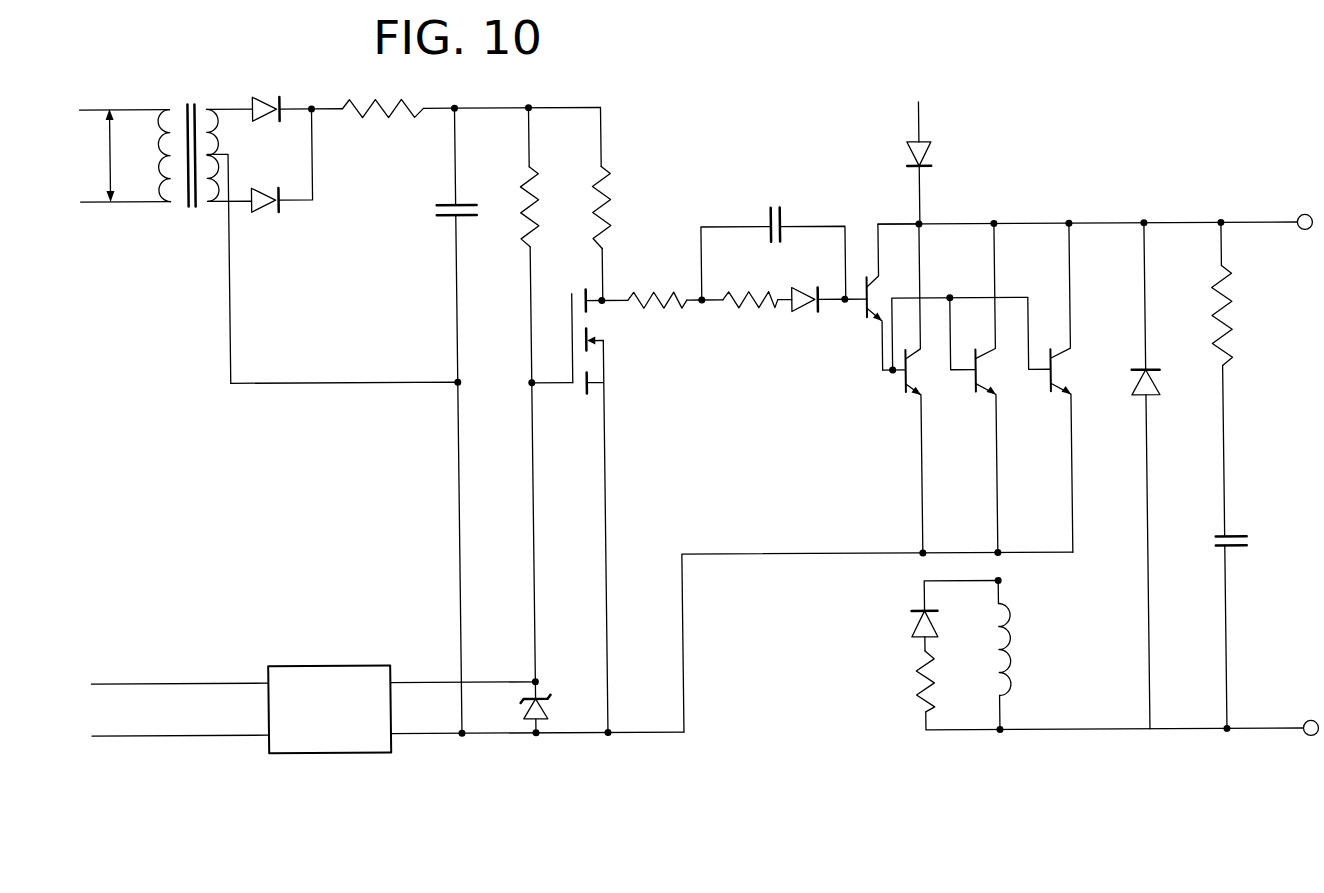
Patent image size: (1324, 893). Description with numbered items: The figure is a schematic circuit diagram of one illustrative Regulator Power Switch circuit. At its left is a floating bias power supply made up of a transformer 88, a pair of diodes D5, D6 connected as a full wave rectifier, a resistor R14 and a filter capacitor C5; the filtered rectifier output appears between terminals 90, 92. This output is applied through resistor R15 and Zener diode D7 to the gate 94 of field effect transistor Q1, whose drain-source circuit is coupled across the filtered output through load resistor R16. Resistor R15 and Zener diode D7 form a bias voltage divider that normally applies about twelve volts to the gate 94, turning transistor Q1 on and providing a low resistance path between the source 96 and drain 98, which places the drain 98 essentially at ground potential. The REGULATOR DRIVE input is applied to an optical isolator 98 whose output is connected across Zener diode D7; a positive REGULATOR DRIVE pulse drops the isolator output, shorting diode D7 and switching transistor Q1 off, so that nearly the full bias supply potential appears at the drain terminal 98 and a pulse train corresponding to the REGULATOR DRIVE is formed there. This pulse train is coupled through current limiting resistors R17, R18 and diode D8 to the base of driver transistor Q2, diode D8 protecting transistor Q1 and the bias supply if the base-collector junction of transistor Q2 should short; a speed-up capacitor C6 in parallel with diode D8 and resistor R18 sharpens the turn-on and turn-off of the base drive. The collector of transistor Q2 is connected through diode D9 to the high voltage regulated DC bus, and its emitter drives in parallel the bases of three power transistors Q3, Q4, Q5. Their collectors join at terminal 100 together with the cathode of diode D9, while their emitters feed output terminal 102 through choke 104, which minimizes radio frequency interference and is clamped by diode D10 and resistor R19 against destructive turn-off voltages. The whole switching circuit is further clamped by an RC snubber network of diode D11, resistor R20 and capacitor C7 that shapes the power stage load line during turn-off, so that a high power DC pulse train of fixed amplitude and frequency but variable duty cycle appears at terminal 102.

The transformer 88 is at (187, 100).
The terminal 90 is at (459, 106).
The terminal 92 is at (452, 385).
The gate 94 is at (571, 386).
The source 96 is at (598, 385).
The drain terminal 98 is at (604, 292).
The terminal 100 is at (1302, 233).
The output terminal 102 is at (1301, 724).
The choke 104 is at (1004, 646).
The diode D5 is at (262, 97).
The diode D6 is at (266, 211).
The Zener diode D7 is at (550, 706).
The diode D8 is at (800, 314).
The diode D9 is at (930, 156).
The diode D10 is at (912, 626).
The diode D11 is at (1140, 401).
The resistor R14 is at (383, 120).
The resistor R15 is at (527, 212).
The load resistor R16 is at (612, 205).
The current limiting resistor R17 is at (667, 313).
The current limiting resistor R18 is at (747, 313).
The resistor R19 is at (917, 681).
The resistor R20 is at (1241, 379).
The filter capacitor C5 is at (432, 212).
The speed-up capacitor C6 is at (774, 242).
The capacitor C7 is at (1248, 541).
The field effect transistor Q1 is at (593, 361).
The driver transistor Q2 is at (863, 310).
The power transistor Q3 is at (900, 378).
The power transistor Q4 is at (970, 394).
The power transistor Q5 is at (1048, 394).